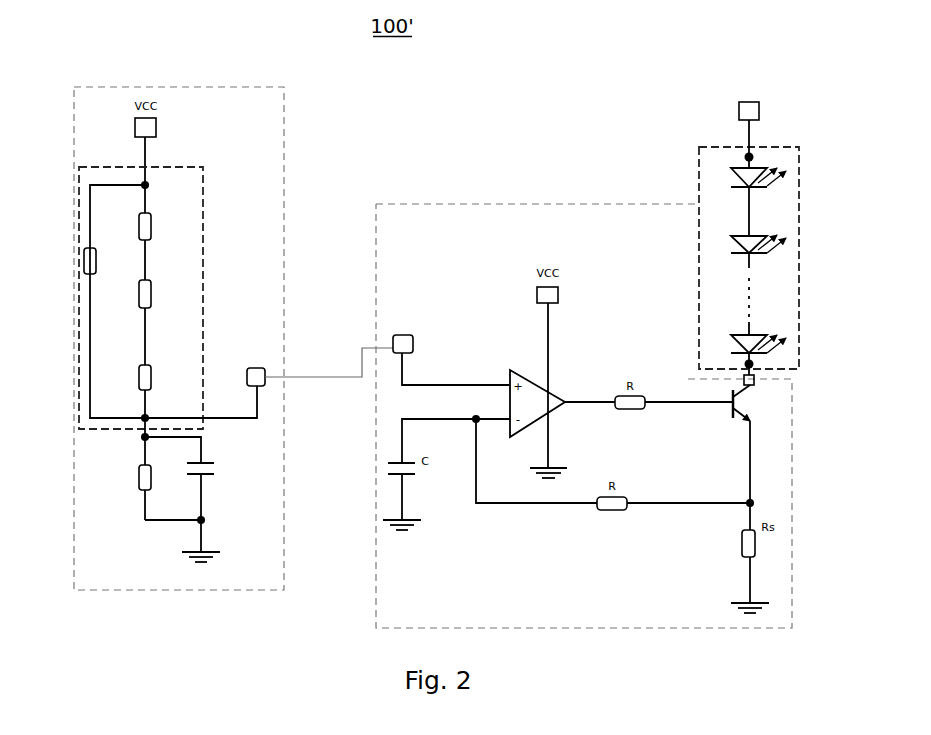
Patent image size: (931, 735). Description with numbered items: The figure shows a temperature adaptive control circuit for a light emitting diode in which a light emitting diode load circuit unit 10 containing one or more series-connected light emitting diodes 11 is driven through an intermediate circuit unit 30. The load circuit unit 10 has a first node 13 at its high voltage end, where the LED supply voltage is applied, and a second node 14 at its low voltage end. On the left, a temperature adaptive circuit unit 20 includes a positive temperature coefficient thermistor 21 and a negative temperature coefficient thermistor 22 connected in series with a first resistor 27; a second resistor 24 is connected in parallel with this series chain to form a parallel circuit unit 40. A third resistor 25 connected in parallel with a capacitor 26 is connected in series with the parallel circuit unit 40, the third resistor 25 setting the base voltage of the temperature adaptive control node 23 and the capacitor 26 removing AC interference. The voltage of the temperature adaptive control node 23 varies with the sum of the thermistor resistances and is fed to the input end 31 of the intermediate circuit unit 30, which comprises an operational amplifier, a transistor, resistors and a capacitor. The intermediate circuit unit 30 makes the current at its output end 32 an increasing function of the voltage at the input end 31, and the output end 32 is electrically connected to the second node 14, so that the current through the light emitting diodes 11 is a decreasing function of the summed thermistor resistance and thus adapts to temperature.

The light emitting diode load circuit unit 10 is at (699, 169).
The light emitting diodes 11 is at (765, 328).
The first node 13 is at (752, 156).
The second node 14 is at (755, 361).
The temperature adaptive circuit unit 20 is at (285, 187).
The positive temperature coefficient thermistor 21 is at (148, 292).
The negative temperature coefficient thermistor 22 is at (149, 377).
The temperature adaptive control node 23 is at (260, 382).
The second resistor 24 is at (87, 262).
The third resistor 25 is at (143, 476).
The capacitor 26 is at (212, 473).
The first resistor 27 is at (148, 225).
The intermediate circuit unit 30 is at (552, 202).
The input end 31 is at (397, 338).
The output end 32 is at (754, 377).
The parallel circuit unit 40 is at (108, 165).